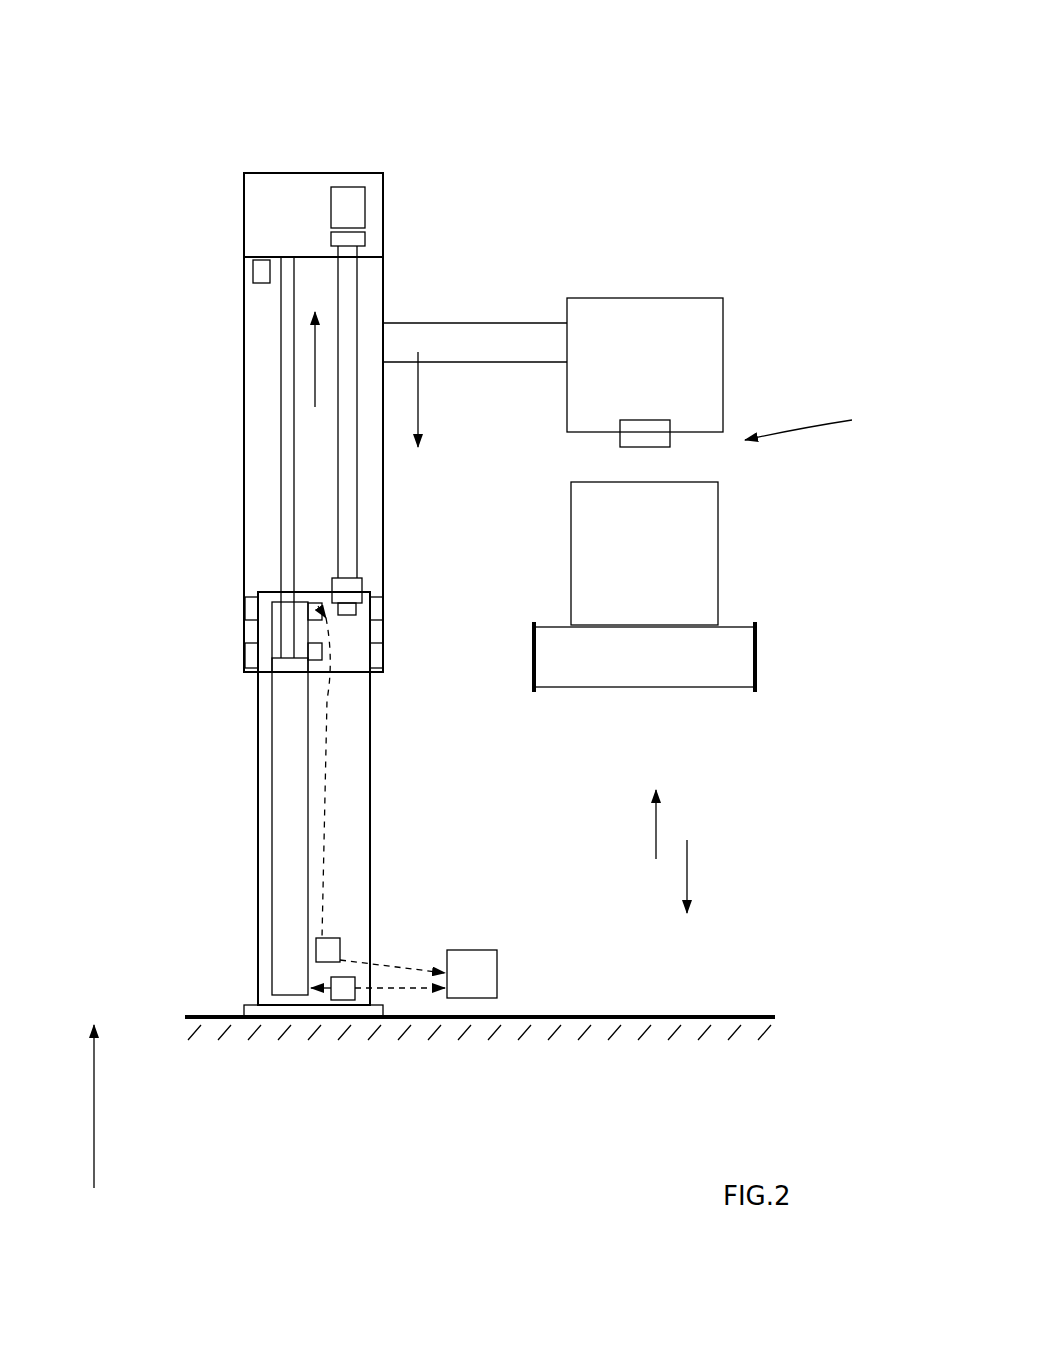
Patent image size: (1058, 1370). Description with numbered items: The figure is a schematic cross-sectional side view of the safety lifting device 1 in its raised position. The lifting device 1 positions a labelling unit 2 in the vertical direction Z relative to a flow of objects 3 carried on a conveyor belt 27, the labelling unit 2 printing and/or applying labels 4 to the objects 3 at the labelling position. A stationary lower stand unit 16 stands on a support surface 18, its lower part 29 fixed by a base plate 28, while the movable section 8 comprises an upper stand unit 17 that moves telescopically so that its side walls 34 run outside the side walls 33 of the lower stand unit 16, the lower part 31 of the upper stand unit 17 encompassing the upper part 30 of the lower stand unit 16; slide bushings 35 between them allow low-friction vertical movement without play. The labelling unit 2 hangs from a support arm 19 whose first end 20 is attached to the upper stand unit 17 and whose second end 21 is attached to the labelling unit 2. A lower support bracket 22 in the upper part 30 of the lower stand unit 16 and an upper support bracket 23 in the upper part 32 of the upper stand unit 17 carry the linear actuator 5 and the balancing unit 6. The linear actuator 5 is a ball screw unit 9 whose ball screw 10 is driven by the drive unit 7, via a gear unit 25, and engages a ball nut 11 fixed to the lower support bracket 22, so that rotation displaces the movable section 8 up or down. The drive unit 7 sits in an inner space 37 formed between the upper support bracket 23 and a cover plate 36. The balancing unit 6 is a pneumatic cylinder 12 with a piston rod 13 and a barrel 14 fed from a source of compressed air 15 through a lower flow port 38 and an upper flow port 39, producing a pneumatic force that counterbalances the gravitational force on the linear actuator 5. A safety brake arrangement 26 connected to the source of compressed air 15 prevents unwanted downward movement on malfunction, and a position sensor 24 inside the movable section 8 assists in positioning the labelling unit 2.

The safety lifting device 1 is at (497, 133).
The labelling unit 2 is at (683, 322).
The objects 3 is at (710, 528).
The labels 4 is at (660, 428).
The linear actuator 5 is at (327, 287).
The balancing unit 6 is at (280, 535).
The drive unit 7 is at (348, 193).
The movable section 8 is at (233, 238).
The ball screw unit 9 is at (325, 247).
The ball screw 10 is at (350, 285).
The ball nut 11 is at (355, 585).
The pneumatic cylinder 12 is at (285, 735).
The piston rod 13 is at (287, 290).
The barrel 14 is at (285, 878).
The source of compressed air 15 is at (470, 978).
The lower stand unit 16 is at (362, 855).
The upper stand unit 17 is at (255, 397).
The support surface 18 is at (690, 1025).
The support arm 19 is at (453, 337).
The first end 20 is at (407, 303).
The second end 21 is at (548, 315).
The lower support bracket 22 is at (270, 597).
The upper support bracket 23 is at (263, 252).
The position sensor 24 is at (263, 272).
The gear unit 25 is at (360, 237).
The safety brake arrangement 26 is at (276, 612).
The conveyor belt 27 is at (738, 648).
The base plate 28 is at (257, 1013).
The lower part 29 is at (218, 980).
The upper part 30 is at (237, 697).
The lower part 31 is at (205, 590).
The upper part 32 is at (183, 235).
The side walls 33 is at (256, 790).
The side walls 34 is at (245, 445).
The slide bushings 35 is at (245, 628).
The cover plate 36 is at (300, 172).
The inner space 37 is at (325, 183).
The lower flow port 38 is at (312, 992).
The upper flow port 39 is at (333, 665).